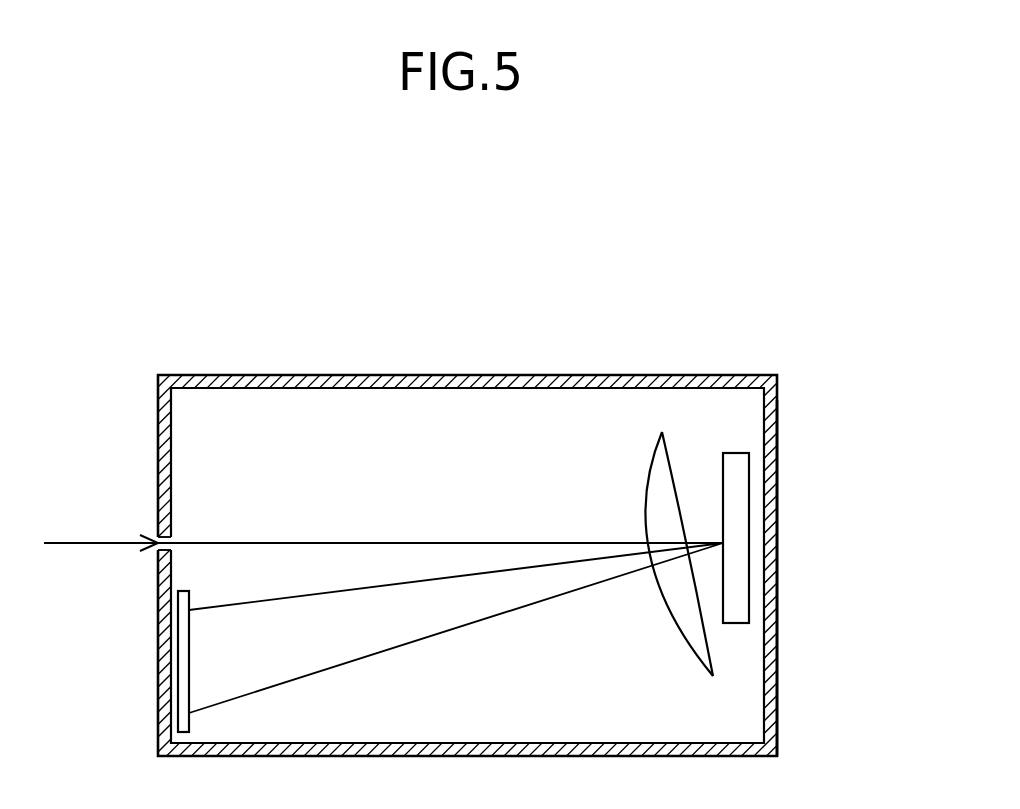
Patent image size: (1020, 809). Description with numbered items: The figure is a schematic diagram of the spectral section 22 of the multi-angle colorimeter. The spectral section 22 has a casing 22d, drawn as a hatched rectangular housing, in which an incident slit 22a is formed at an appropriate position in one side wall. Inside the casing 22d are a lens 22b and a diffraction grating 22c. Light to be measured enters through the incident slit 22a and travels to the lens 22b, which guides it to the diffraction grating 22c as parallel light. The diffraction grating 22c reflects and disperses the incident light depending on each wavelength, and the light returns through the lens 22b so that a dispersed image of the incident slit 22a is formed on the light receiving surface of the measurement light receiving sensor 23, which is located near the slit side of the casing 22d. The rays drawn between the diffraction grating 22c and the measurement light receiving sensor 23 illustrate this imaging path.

The spectral section 22 is at (474, 372).
The incident slit 22a is at (172, 538).
The lens 22b is at (669, 626).
The diffraction grating 22c is at (737, 452).
The casing 22d is at (777, 698).
The measurement light receiving sensor 23 is at (190, 721).